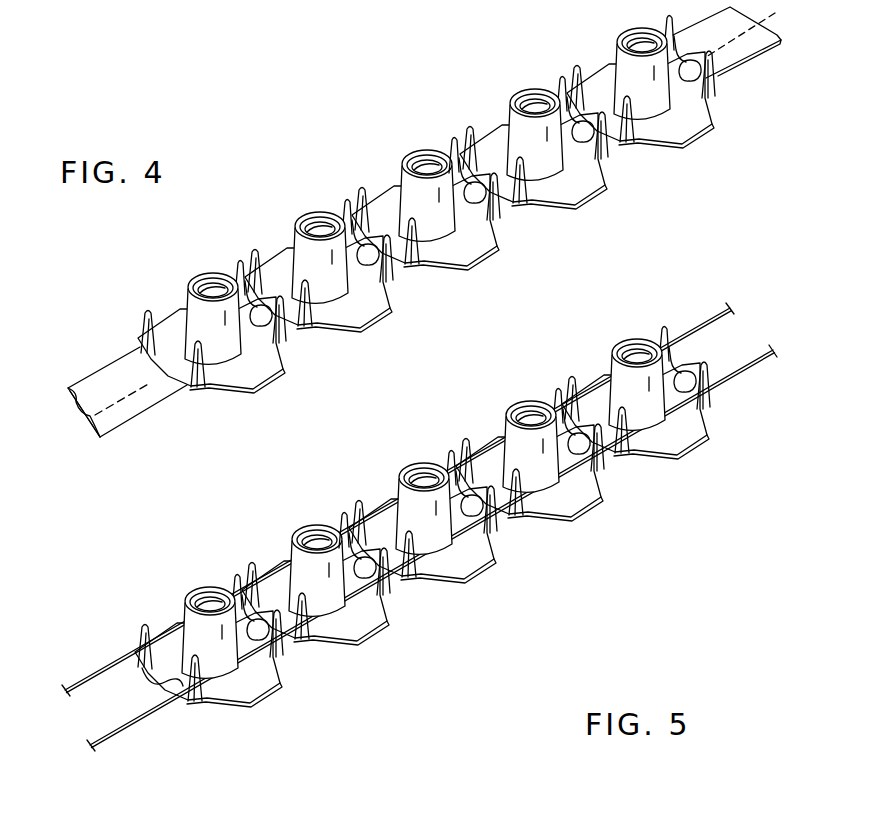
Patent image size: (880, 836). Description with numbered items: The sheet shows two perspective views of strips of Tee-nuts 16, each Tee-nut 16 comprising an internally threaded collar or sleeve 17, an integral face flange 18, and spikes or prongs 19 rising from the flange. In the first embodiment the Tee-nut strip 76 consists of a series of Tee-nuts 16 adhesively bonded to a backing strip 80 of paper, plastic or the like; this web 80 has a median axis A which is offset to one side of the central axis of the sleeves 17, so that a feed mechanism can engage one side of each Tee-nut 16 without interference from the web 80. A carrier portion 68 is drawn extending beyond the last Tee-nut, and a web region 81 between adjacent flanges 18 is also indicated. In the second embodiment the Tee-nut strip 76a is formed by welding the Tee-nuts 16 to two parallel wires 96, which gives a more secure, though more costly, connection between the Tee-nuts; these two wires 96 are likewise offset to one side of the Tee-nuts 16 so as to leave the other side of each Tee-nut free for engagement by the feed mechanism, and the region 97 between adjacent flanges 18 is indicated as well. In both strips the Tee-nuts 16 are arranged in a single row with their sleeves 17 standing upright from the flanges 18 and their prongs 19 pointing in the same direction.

In FIG. 4, the Tee-nut 16 is at (383, 163).
In FIG. 5, the Tee-nut 16 is at (595, 344).
In FIG. 4, the internally threaded collar or sleeve 17 is at (518, 90).
In FIG. 5, the internally threaded collar or sleeve 17 is at (405, 465).
In FIG. 4, the integral face flange 18 is at (690, 118).
In FIG. 5, the integral face flange 18 is at (684, 437).
In FIG. 4, the spikes or prongs 19 is at (459, 140).
In FIG. 5, the spikes or prongs 19 is at (358, 525).
In FIG. 4, the carrier strip 68 is at (577, 39).
In FIG. 4, the Tee-nut strip 76 is at (241, 204).
In FIG. 5, the Tee-nut strip 76a is at (444, 430).
In FIG. 4, the backing strip 80 is at (147, 405).
In FIG. 4, the connecting web 81 is at (410, 287).
In FIG. 5, the parallel wires 96 is at (693, 320).
In FIG. 5, the connecting web 97 is at (421, 602).
In FIG. 4, the median axis A is at (62, 425).